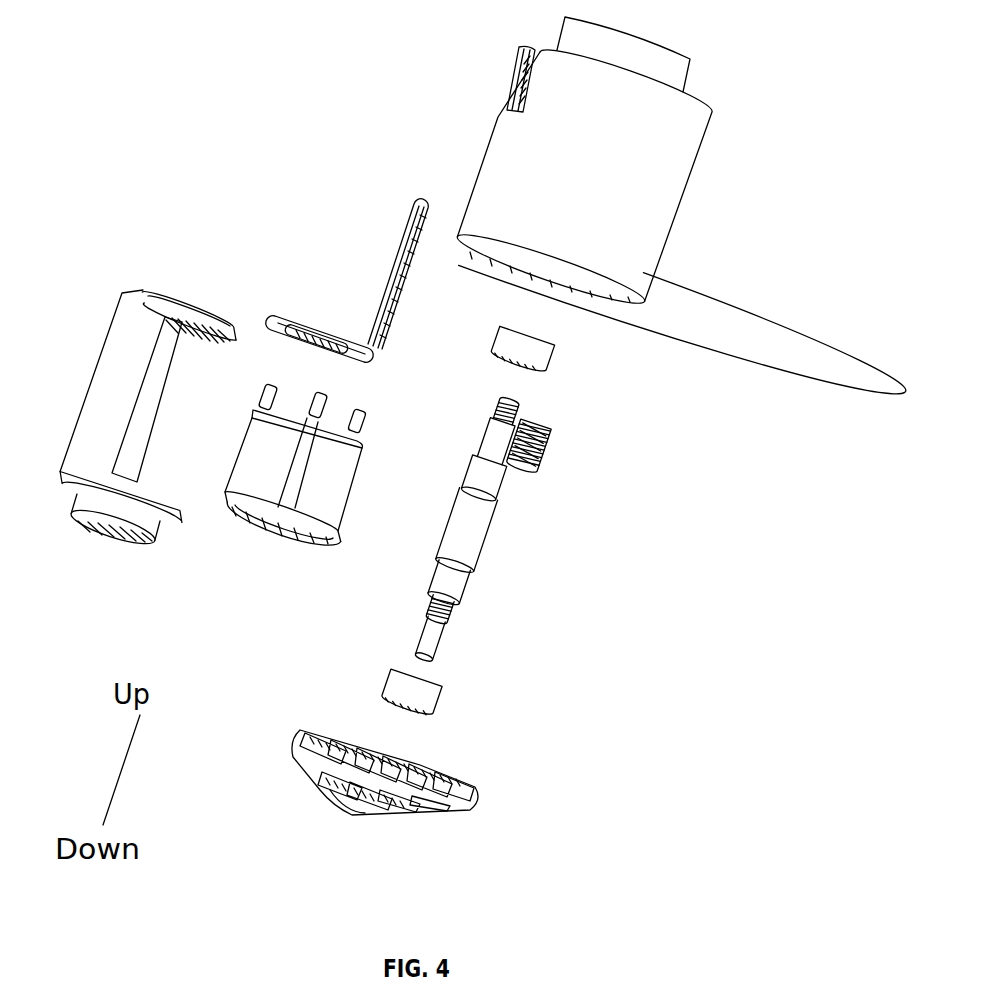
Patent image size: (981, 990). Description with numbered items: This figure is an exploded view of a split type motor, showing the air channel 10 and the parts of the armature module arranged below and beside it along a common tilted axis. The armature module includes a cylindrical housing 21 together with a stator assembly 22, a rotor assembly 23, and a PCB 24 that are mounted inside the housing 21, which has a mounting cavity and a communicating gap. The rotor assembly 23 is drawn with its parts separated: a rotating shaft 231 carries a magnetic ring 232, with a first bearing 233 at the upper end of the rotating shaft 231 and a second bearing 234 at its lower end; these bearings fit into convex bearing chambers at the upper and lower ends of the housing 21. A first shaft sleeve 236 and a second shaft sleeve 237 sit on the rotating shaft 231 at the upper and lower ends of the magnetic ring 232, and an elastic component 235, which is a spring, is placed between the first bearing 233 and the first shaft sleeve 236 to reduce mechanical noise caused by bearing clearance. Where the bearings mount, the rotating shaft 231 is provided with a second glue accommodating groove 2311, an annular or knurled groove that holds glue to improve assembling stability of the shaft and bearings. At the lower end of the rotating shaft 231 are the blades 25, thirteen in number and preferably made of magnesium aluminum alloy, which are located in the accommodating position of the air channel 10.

The air channel 10 is at (645, 187).
The housing 21 is at (133, 314).
The stator assembly 22 is at (264, 475).
The rotor assembly 23 is at (606, 559).
The PCB 24 is at (297, 318).
The blades 25 is at (382, 765).
The rotating shaft 231 is at (499, 669).
The second glue accommodating groove 2311 is at (512, 420).
The magnetic ring 232 is at (473, 530).
The first bearing 233 is at (540, 357).
The second bearing 234 is at (402, 685).
The elastic component 235 is at (535, 457).
The first shaft sleeve 236 is at (490, 478).
The second shaft sleeve 237 is at (455, 583).